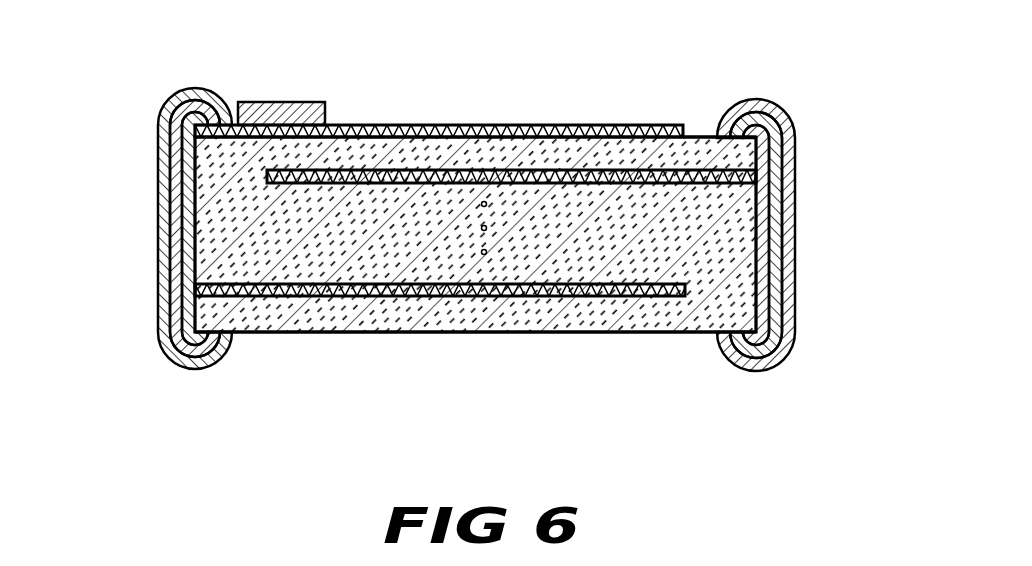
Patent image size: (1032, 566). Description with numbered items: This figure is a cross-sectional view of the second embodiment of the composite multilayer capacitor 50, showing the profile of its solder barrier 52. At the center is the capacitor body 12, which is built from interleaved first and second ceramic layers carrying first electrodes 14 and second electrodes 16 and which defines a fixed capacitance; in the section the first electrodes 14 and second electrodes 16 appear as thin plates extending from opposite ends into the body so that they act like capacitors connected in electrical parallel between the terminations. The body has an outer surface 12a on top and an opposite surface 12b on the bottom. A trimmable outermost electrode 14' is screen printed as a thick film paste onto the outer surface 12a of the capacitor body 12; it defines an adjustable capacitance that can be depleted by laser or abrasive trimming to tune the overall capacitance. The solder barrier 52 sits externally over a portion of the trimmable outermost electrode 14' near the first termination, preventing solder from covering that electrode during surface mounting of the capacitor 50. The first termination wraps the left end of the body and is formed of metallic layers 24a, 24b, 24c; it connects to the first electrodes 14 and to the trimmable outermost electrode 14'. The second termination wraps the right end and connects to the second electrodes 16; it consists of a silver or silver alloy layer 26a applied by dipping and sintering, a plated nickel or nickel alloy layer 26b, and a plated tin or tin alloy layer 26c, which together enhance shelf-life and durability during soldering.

The composite multilayer capacitor 50 is at (772, 66).
The capacitor body 12 is at (543, 372).
The outer surface of the capacitor body 12a is at (710, 137).
The bottom surface of body 12b is at (290, 332).
The first electrodes 14 is at (440, 258).
The trimmable outermost electrode 14' is at (439, 101).
The second electrodes 16 is at (291, 183).
The solder barrier 52 is at (271, 101).
The metallic layer of first termination 24a is at (157, 187).
The metallic layer of first termination 24b is at (170, 137).
The metallic layer of first termination 24c is at (173, 107).
The silver or silver alloy layer 26a is at (765, 322).
The nickel or nickel alloy layer 26b is at (782, 340).
The tin or tin alloy layer 26c is at (773, 370).